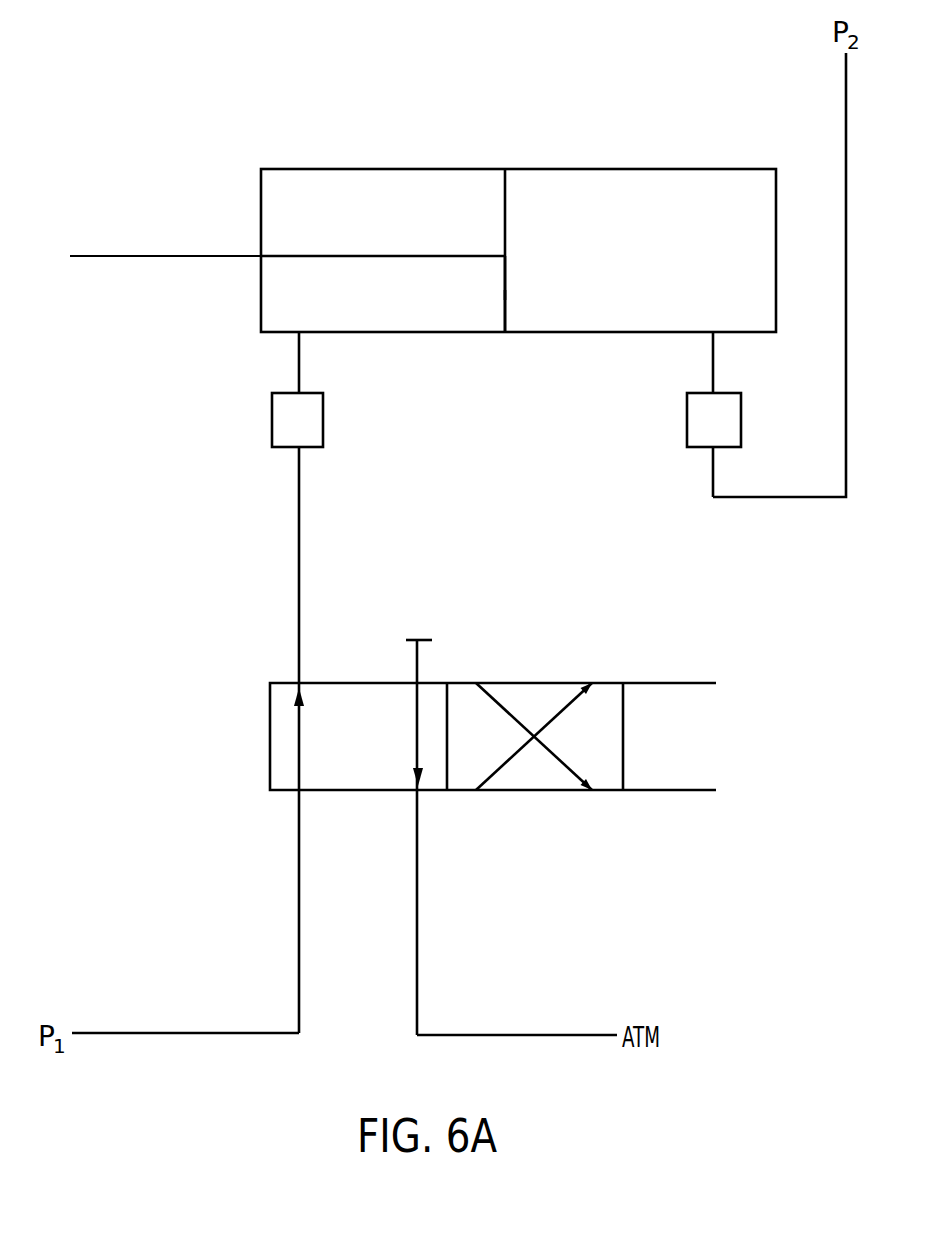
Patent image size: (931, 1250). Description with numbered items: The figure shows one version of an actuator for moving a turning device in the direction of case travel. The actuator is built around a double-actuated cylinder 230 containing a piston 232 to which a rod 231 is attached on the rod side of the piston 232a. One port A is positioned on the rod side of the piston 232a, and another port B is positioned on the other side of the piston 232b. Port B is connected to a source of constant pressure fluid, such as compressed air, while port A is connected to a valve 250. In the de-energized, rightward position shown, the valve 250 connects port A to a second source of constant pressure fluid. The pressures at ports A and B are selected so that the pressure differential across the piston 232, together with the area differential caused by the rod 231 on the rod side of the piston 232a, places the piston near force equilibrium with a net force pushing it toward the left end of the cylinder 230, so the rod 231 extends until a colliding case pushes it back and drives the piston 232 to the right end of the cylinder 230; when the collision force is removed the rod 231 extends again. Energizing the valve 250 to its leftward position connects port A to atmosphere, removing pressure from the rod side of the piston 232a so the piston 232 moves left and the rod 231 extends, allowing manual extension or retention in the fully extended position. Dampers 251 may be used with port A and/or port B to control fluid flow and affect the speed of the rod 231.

The cylinder 230 is at (687, 168).
The rod 231 is at (149, 255).
The piston 232 is at (506, 196).
The rod side of the piston 232a is at (504, 281).
The other side of the piston 232b is at (506, 298).
The dampers 251 is at (324, 425).
The valve 250 is at (590, 658).
The port A is at (312, 351).
The port B is at (690, 351).